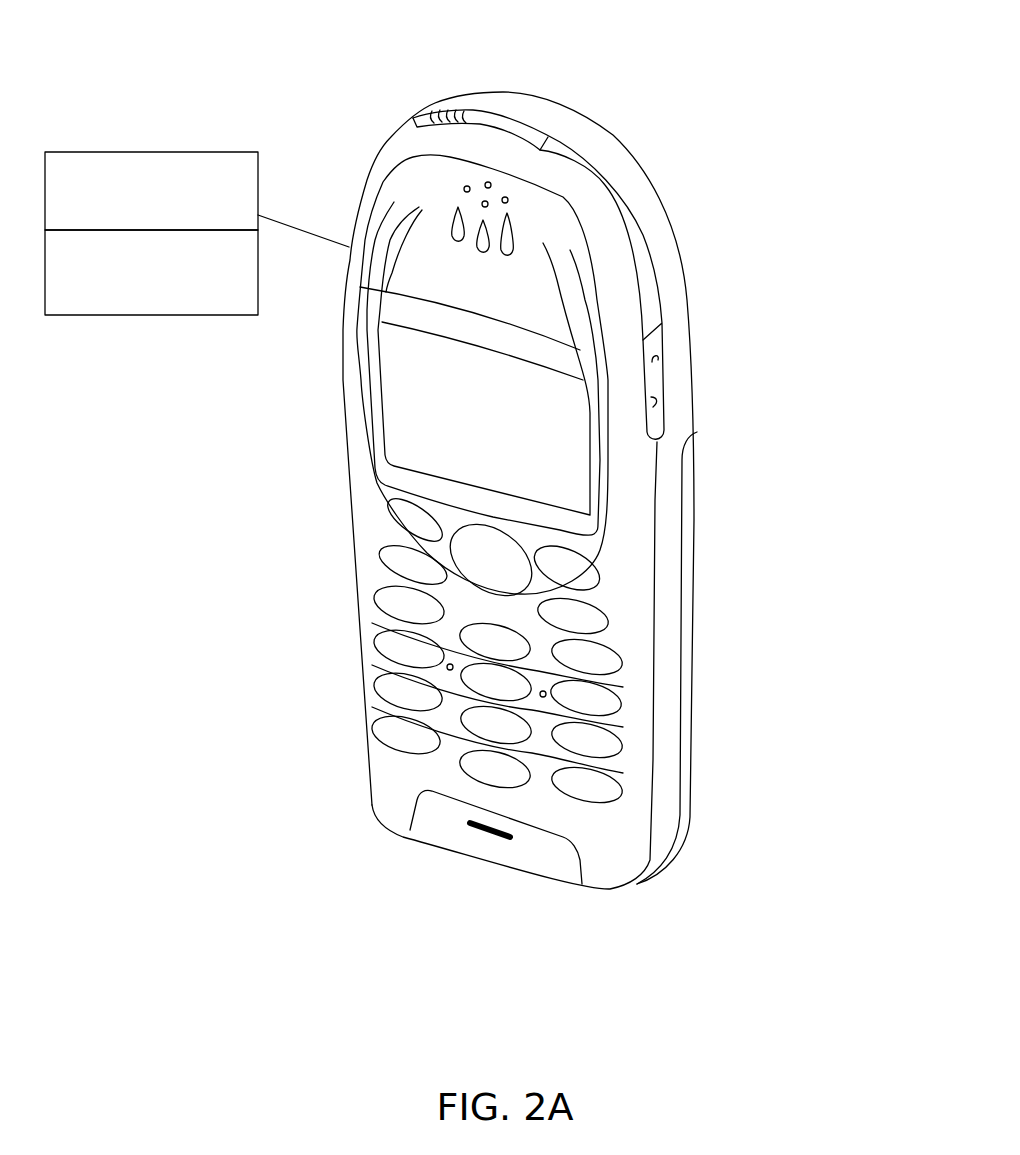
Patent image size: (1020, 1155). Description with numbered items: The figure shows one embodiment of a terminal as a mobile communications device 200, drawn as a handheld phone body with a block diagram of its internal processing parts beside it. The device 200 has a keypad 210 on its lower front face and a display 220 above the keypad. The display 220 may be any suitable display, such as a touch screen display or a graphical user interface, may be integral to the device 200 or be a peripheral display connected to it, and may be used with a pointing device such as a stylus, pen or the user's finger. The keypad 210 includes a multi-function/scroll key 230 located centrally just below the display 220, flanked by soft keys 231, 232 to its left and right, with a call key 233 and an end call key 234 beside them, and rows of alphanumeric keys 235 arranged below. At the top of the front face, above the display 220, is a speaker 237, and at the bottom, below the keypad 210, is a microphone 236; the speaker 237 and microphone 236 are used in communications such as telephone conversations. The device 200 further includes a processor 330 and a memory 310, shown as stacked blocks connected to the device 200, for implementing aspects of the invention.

The mobile communications device 200 is at (645, 98).
The keypad 210 is at (609, 812).
The display 220 is at (547, 452).
The multi-function/scroll key 230 is at (503, 565).
The soft key 231 is at (410, 518).
The soft key 232 is at (580, 566).
The call key 233 is at (403, 562).
The end call key 234 is at (580, 617).
The alphanumeric keys 235 is at (400, 730).
The microphone 236 is at (488, 834).
The speaker 237 is at (477, 192).
The memory 310 is at (148, 315).
The processor 330 is at (148, 152).